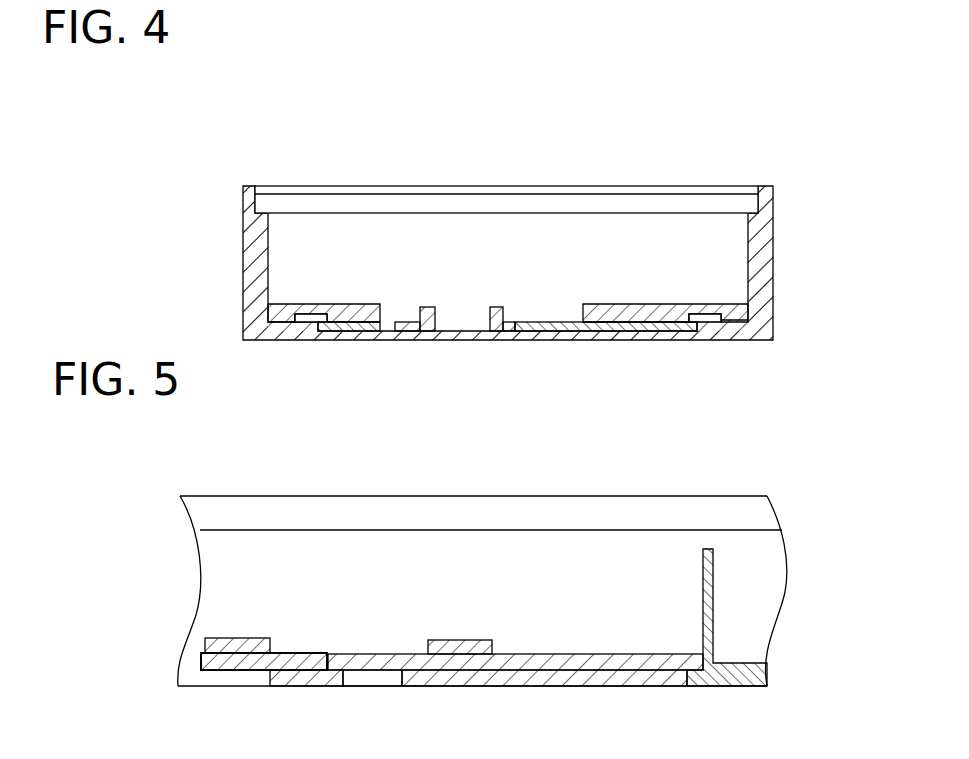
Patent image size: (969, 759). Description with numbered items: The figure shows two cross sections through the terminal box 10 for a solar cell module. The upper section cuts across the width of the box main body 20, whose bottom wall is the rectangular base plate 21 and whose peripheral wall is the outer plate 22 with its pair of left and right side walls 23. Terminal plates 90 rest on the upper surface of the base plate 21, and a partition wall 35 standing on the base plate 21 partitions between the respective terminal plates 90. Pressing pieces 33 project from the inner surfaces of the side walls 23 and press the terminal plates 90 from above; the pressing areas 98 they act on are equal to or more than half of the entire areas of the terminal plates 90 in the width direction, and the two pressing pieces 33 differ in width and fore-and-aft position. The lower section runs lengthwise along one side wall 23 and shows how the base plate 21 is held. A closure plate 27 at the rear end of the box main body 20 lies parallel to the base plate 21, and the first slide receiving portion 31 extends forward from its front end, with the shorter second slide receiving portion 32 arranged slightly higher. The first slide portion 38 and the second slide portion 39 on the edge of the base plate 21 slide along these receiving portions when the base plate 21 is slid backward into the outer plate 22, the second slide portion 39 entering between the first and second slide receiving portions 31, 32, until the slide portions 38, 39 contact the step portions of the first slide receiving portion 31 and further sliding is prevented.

In FIG. 4, the terminal box 10 is at (528, 172).
In FIG. 4, the box main body 20 is at (672, 186).
In FIG. 5, the box main body 20 is at (520, 496).
In FIG. 4, the base plate 21 is at (540, 340).
In FIG. 4, the outer plate 22 is at (354, 187).
In FIG. 5, the outer plate 22 is at (379, 500).
In FIG. 4, the side wall 23 is at (248, 238).
In FIG. 5, the side wall 23 is at (755, 612).
In FIG. 5, the closure plate 27 is at (708, 678).
In FIG. 5, the first slide receiving portion 31 is at (577, 662).
In FIG. 5, the second slide receiving portion 32 is at (243, 643).
In FIG. 4, the pressing piece 33 is at (368, 318).
In FIG. 5, the pressing piece 33 is at (462, 643).
In FIG. 4, the partition wall 35 is at (430, 315).
In FIG. 5, the first slide portion 38 is at (598, 684).
In FIG. 5, the second slide portion 39 is at (250, 668).
In FIG. 4, the terminal plate 90 is at (341, 330).
In FIG. 4, the pressing area 98 is at (352, 321).